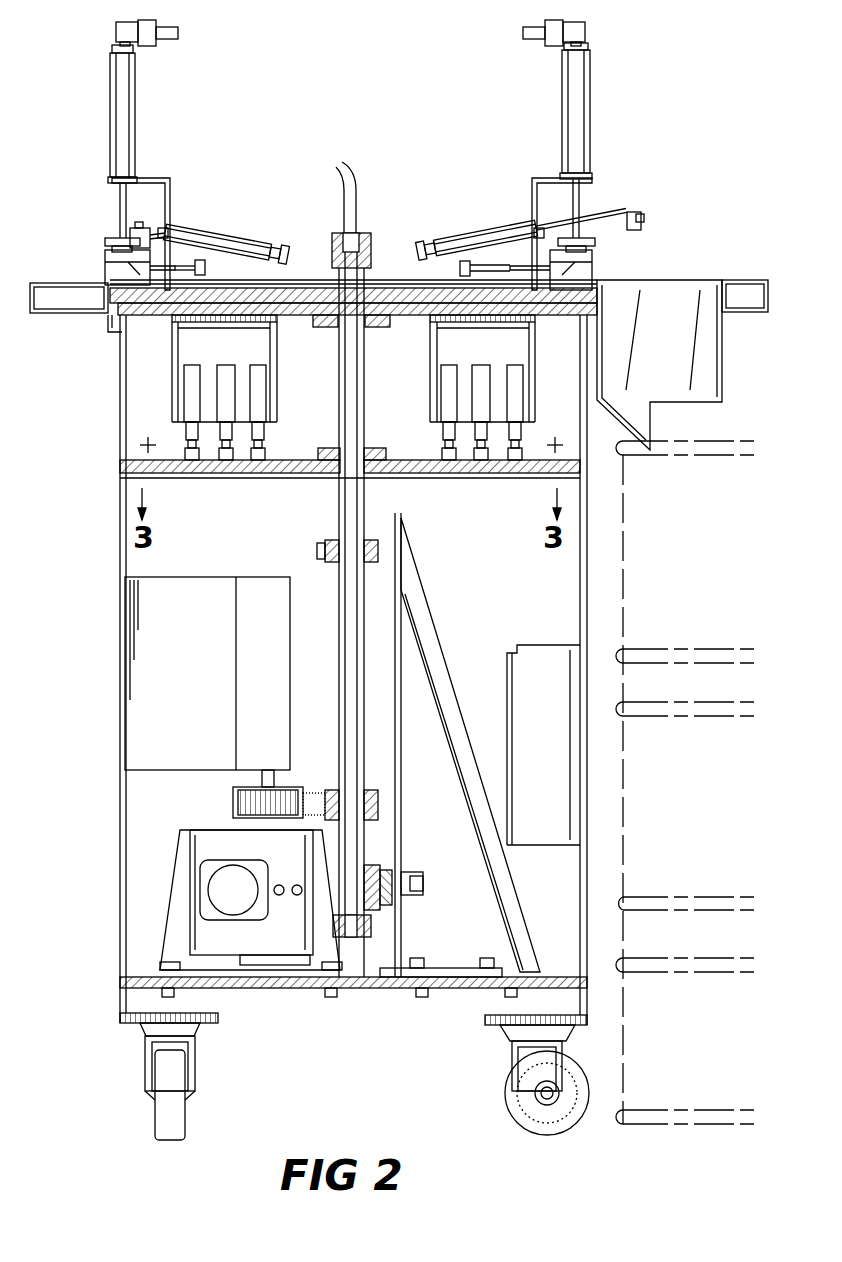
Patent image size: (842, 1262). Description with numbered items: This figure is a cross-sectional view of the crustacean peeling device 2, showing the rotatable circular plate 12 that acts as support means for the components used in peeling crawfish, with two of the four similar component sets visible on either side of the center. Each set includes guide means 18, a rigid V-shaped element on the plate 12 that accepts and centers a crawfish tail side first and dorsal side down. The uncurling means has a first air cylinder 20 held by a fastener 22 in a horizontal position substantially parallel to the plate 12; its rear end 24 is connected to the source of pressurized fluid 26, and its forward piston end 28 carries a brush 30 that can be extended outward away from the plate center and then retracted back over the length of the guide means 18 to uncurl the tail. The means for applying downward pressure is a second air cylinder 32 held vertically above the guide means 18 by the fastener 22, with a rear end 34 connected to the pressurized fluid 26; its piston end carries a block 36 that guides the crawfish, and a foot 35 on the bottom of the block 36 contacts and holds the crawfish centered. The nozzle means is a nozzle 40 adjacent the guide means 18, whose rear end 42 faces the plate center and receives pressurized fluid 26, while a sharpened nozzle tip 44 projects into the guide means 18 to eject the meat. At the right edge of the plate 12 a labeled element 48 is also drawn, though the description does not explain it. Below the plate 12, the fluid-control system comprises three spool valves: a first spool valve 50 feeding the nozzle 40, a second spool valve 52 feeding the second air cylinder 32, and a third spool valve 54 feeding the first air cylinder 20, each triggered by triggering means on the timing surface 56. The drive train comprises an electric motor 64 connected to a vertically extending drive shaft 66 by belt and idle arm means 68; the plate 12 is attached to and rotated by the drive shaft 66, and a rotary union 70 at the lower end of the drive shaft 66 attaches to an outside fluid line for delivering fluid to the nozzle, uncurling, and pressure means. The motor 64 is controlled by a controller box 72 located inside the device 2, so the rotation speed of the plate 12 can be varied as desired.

The device 2 is at (396, 92).
The circular plate 12 is at (386, 290).
The guide means 18 is at (105, 256).
The first air cylinder 20 is at (216, 240).
The fastener 22 is at (168, 178).
The rear end 24 is at (284, 252).
The source of pressurized fluid 26 is at (358, 190).
The forward piston end 28 is at (172, 230).
The brush 30 is at (150, 228).
The second air cylinder 32 is at (137, 120).
The rear end 34 is at (148, 46).
The foot 35 is at (130, 235).
The block 36 is at (110, 240).
The nozzle 40 is at (135, 322).
The rear end 42 is at (205, 268).
The sharpened nozzle tip 44 is at (150, 268).
The hopper 48 is at (680, 300).
The first spool valve 50 is at (192, 474).
The second spool valve 52 is at (226, 474).
The third spool valve 54 is at (258, 474).
The timing surface 56 is at (285, 460).
The electric motor 64 is at (205, 830).
The drive shaft 66 is at (345, 628).
The belt and idle arm means 68 is at (315, 793).
The rotary union 70 is at (357, 937).
The controller box 72 is at (548, 645).